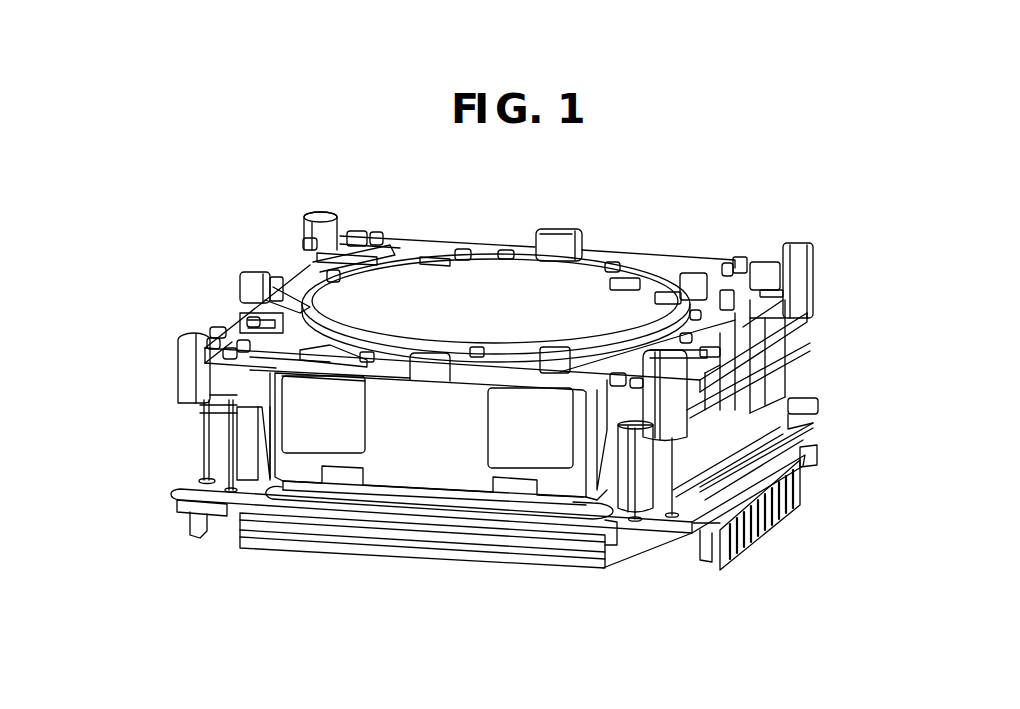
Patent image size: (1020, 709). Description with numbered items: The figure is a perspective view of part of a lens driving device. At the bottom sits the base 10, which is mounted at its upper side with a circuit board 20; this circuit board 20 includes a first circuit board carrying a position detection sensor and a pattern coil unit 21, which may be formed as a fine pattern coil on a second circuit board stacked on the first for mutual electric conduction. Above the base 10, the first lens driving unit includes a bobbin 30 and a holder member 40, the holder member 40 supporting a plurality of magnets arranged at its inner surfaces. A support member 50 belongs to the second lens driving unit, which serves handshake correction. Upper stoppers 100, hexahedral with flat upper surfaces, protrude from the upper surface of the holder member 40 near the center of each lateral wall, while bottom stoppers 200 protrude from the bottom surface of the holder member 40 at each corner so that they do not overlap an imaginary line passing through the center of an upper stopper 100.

The base 10 is at (475, 562).
The circuit board 20 is at (617, 533).
The pattern coil unit 21 is at (770, 432).
The bobbin 30 is at (472, 283).
The holder member 40 is at (403, 458).
The support member 50 is at (210, 452).
The upper stopper 100 is at (568, 229).
The bottom stopper 200 is at (243, 468).